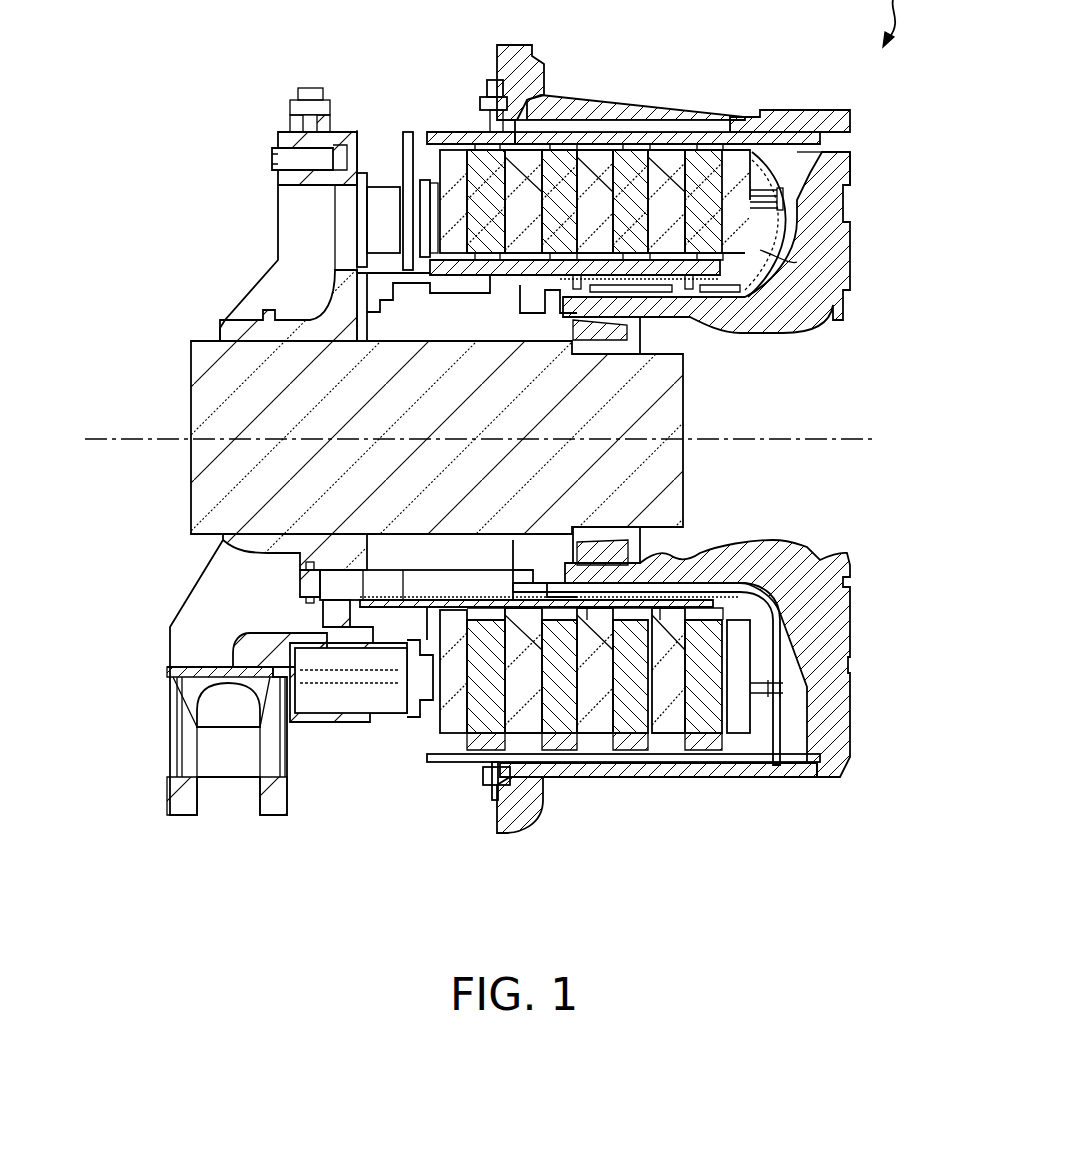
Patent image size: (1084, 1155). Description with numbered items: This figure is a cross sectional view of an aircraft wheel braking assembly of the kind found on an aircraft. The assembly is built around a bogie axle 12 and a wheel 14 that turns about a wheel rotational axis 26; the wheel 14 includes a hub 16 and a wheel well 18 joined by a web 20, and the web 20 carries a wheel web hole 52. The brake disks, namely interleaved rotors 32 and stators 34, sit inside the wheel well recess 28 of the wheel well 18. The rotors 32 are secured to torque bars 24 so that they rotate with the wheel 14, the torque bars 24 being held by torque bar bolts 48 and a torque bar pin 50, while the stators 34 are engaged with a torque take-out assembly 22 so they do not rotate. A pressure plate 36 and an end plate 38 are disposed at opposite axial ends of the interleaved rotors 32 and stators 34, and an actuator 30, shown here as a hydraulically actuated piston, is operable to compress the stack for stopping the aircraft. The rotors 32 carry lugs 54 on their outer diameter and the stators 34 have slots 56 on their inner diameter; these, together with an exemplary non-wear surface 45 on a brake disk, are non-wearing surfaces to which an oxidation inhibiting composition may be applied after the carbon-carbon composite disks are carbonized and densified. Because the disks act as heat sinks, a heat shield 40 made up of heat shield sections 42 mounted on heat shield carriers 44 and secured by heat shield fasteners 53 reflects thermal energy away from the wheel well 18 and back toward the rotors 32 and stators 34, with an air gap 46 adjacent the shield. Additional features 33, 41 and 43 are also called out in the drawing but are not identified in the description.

The bogie axle 12 is at (172, 380).
The wheel 14 is at (710, 85).
The hub 16 is at (655, 308).
The wheel well 18 is at (837, 128).
The web 20 is at (810, 216).
The torque take-out assembly 22 is at (485, 292).
The torque bar 24 is at (440, 130).
The wheel rotational axis 26 is at (750, 437).
The wheel well recess 28 is at (843, 238).
The actuator 30 is at (345, 752).
The brake rotor 32 is at (474, 216).
The sleeve 33 is at (760, 258).
The brake stator 34 is at (511, 216).
The pressure plate 36 is at (440, 216).
The end plate 38 is at (724, 216).
The heat shield 40 is at (446, 792).
The gap 41 is at (702, 268).
The heat shield section 42 is at (643, 122).
The channel 43 is at (800, 313).
The heat shield carrier 44 is at (512, 780).
The non-wear surface 45 is at (742, 263).
The air gap 46 is at (541, 60).
The torque bar bolt 48 is at (493, 110).
The torque bar pin 50 is at (800, 160).
The wheel web hole 52 is at (850, 173).
The heat shield fastener 53 is at (494, 800).
The rotor lug 54 is at (622, 147).
The stator slot 56 is at (517, 260).